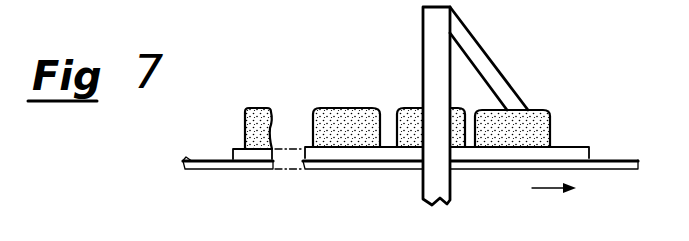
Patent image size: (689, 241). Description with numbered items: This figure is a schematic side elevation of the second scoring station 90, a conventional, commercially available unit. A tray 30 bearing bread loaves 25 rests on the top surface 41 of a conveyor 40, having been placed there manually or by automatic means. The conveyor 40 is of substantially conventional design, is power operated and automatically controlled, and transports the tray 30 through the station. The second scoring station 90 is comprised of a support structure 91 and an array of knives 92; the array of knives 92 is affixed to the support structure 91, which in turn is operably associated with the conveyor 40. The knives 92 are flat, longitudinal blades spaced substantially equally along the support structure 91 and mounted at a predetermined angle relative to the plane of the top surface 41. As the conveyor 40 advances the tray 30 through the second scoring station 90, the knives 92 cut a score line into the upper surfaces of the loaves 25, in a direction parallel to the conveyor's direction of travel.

The loaves 25 is at (257, 108).
The tray 30 is at (233, 150).
The conveyor 40 is at (244, 177).
The top surface 41 is at (203, 159).
The second scoring station 90 is at (424, 106).
The support structure 91 is at (423, 37).
The array of knives 92 is at (500, 80).